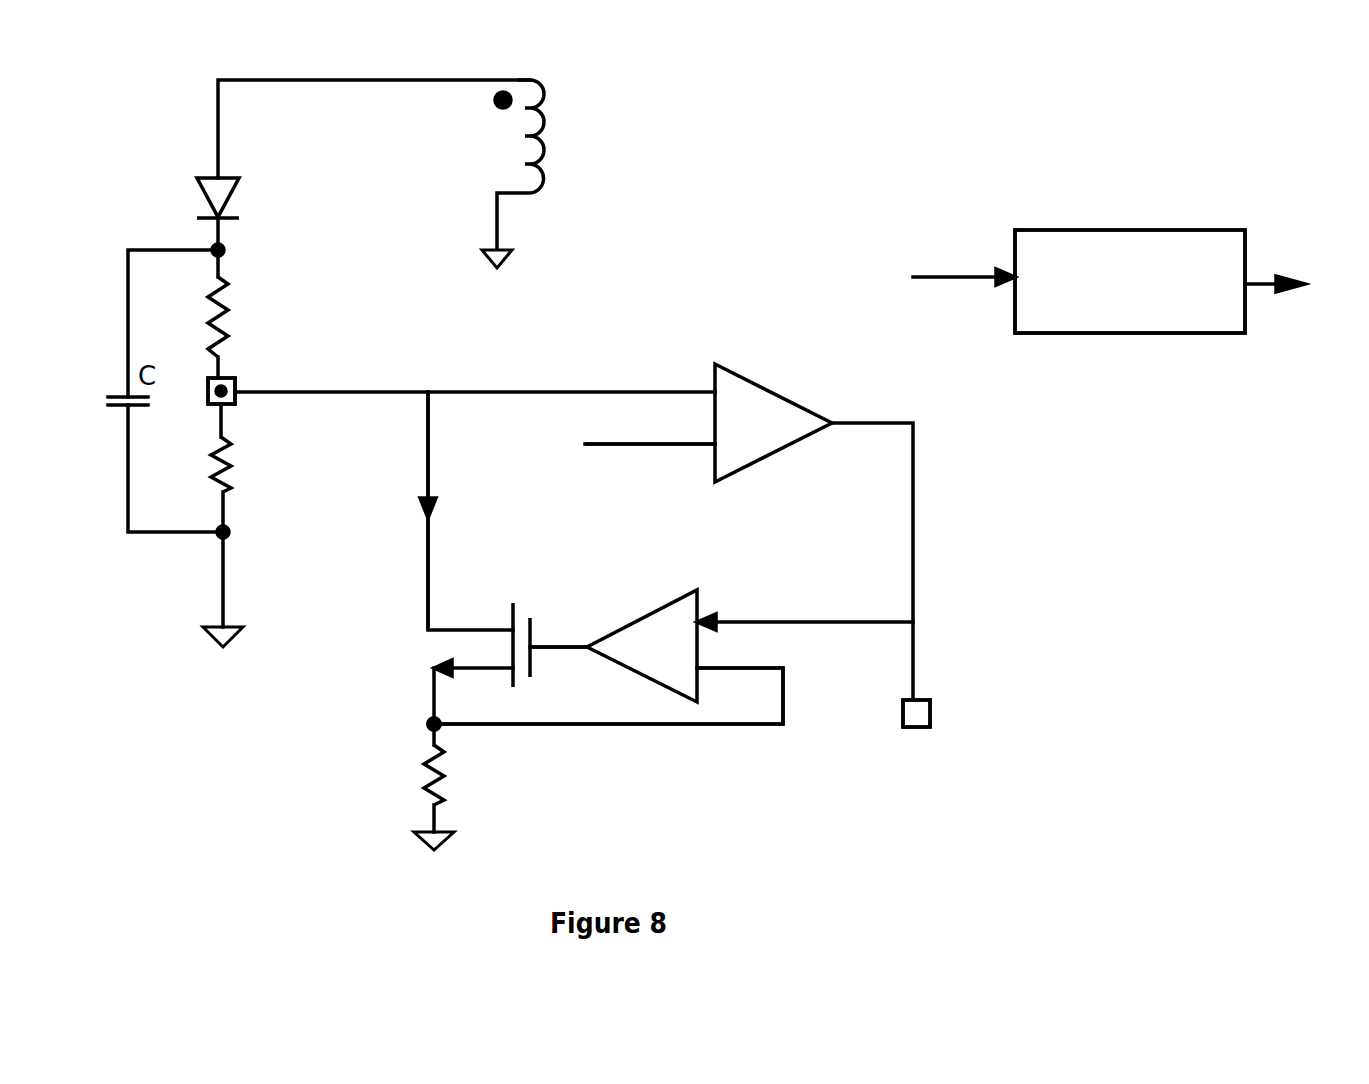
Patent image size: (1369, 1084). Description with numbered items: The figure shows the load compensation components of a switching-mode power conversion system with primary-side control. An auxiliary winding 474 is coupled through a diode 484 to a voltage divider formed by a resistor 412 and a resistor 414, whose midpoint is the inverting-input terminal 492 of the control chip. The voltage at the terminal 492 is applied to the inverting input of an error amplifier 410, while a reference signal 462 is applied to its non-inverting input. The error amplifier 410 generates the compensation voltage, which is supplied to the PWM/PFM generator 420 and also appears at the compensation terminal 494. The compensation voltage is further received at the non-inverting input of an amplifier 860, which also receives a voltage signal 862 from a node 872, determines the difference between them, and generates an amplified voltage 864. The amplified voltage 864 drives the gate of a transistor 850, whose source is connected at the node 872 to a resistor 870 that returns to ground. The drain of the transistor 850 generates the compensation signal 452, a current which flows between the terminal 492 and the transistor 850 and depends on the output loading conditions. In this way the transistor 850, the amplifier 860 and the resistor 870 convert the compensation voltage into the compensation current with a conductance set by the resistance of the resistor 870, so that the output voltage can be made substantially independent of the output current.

The diode 484 is at (238, 170).
The auxiliary winding 474 is at (528, 141).
The resistor 412 is at (212, 335).
The resistor 414 is at (215, 478).
The terminal 492 is at (235, 404).
The compensation signal 452 is at (428, 448).
The reference signal 462 is at (691, 450).
The error amplifier 410 is at (801, 460).
The PWM/PFM generator 420 is at (1105, 230).
The transistor 850 is at (537, 622).
The amplified voltage 864 is at (559, 650).
The amplifier 860 is at (666, 690).
The voltage signal 862 is at (672, 728).
The node 872 is at (428, 722).
The resistor 870 is at (426, 794).
The terminal 494 is at (914, 727).